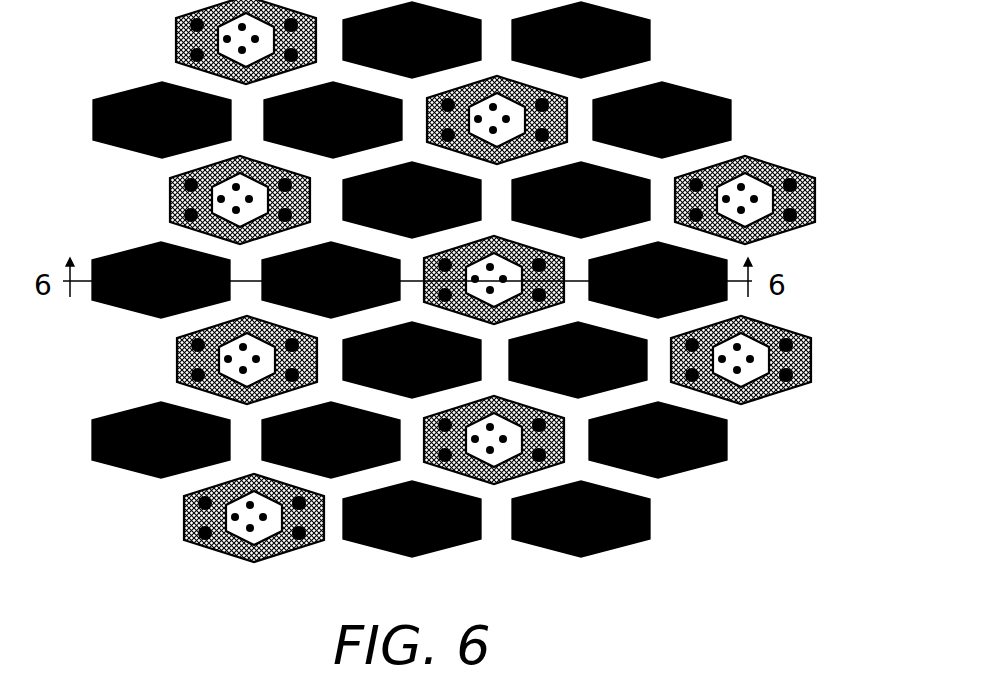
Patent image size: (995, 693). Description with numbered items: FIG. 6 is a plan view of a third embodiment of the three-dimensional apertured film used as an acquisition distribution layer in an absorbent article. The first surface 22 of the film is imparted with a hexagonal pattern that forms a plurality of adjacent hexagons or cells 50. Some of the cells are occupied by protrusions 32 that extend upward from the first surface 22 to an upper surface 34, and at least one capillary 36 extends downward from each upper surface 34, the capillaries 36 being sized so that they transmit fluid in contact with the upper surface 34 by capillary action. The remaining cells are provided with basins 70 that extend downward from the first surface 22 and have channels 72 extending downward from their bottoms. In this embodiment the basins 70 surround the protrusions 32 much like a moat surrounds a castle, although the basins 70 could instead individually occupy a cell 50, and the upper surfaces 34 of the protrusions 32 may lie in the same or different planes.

The first surface 22 is at (573, 453).
The protrusions 32 is at (228, 517).
The upper surface 34 is at (240, 528).
The capillary 36 is at (755, 200).
The cells 50 is at (703, 463).
The basins 70 is at (765, 398).
The channels 72 is at (793, 357).